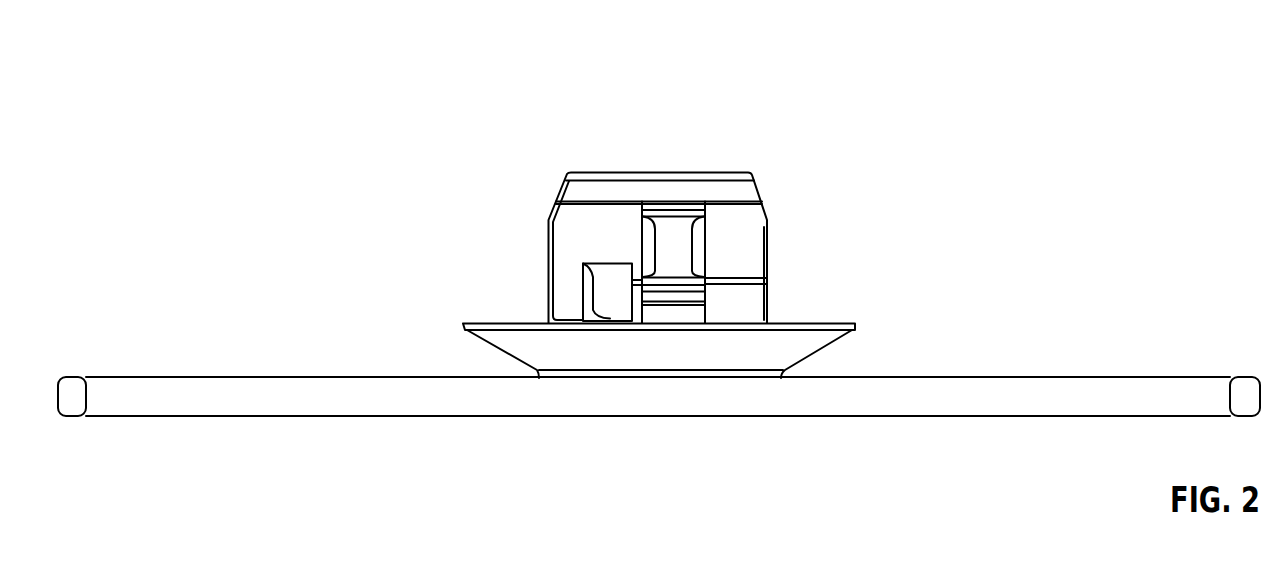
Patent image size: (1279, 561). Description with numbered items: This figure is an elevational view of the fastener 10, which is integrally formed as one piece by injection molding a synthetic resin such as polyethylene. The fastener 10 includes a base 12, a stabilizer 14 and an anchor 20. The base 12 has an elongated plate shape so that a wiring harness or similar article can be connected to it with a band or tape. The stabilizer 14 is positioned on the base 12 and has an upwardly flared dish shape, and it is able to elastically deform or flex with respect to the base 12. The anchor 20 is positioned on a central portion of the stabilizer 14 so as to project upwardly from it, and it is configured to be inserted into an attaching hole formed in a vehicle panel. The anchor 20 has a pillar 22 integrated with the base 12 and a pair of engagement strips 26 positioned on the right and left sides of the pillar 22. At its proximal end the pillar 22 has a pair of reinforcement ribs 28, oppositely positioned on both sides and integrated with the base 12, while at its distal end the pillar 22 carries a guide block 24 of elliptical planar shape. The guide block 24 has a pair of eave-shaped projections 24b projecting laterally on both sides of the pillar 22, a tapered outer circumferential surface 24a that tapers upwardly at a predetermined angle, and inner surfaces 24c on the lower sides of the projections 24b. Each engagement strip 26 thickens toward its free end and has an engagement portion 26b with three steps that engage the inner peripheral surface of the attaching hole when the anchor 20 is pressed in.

The fastener 10 is at (345, 117).
The base 12 is at (1082, 377).
The stabilizer 14 is at (817, 322).
The anchor 20 is at (646, 275).
The pillar 22 is at (745, 233).
The guide block 24 is at (648, 204).
The tapered outer circumferential surface 24a is at (762, 188).
The eave-shaped projections 24b is at (677, 190).
The inner surfaces 24c is at (597, 205).
The engagement strips 26 is at (602, 345).
The engagement portion 26b is at (672, 294).
The reinforcement ribs 28 is at (610, 287).